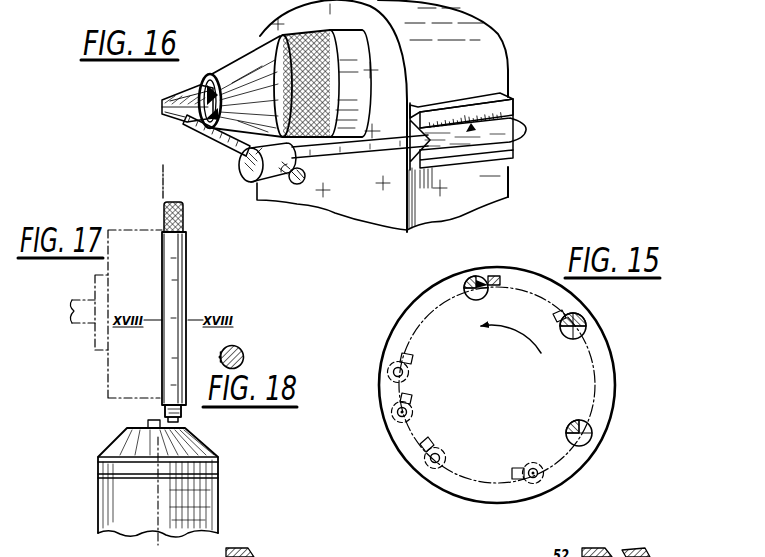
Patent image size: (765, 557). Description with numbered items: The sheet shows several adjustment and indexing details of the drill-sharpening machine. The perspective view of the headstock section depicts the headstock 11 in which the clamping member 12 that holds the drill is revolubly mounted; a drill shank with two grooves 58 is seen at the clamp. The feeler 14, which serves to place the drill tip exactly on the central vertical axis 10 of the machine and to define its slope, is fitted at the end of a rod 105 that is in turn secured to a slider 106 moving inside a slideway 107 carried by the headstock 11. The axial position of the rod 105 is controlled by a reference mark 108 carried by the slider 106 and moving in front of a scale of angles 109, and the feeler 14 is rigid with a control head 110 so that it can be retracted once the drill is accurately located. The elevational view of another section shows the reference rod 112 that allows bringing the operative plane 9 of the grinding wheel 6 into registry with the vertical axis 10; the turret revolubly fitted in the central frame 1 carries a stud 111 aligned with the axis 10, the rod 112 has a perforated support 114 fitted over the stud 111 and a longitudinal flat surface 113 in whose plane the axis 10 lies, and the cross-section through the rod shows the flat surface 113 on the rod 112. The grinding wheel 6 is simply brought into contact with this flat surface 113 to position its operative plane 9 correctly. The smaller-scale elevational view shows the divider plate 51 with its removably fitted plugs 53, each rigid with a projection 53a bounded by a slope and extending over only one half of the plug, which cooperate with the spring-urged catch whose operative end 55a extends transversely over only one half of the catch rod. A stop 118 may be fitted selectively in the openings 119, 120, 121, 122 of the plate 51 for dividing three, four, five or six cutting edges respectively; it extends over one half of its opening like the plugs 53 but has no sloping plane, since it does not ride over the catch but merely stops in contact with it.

In FIG. 17, the central frame 1 is at (203, 453).
In FIG. 17, the grinding wheel 6 is at (120, 243).
In FIG. 17, the operative plane 9 is at (167, 260).
In FIG. 17, the central vertical axis 10 is at (164, 191).
In FIG. 16, the headstock 11 is at (495, 51).
In FIG. 16, the clamping member 12 is at (222, 65).
In FIG. 16, the feeler 14 is at (210, 136).
In FIG. 15, the divider plate 51 is at (605, 402).
In FIG. 15, the plug 53 is at (474, 297).
In FIG. 15, the projection 53a is at (586, 322).
In FIG. 15, the operative end of catch 55a is at (495, 276).
In FIG. 16, the grooves 58 is at (176, 100).
In FIG. 16, the rod 105 is at (354, 152).
In FIG. 16, the slider 106 is at (522, 130).
In FIG. 16, the slideway 107 is at (413, 112).
In FIG. 16, the reference mark 108 is at (468, 134).
In FIG. 16, the scale of angles 109 is at (461, 114).
In FIG. 16, the control head 110 is at (296, 186).
In FIG. 17, the stud 111 is at (160, 412).
In FIG. 17, the reference rod 112 is at (180, 291).
In FIG. 18, the reference rod 112 is at (240, 349).
In FIG. 17, the longitudinal flat surface 113 is at (162, 368).
In FIG. 18, the longitudinal flat surface 113 is at (220, 357).
In FIG. 17, the perforated support 114 is at (148, 423).
In FIG. 15, the stop 118 is at (410, 412).
In FIG. 15, the opening 119 is at (541, 479).
In FIG. 15, the opening 120 is at (445, 458).
In FIG. 15, the opening 121 is at (409, 406).
In FIG. 15, the opening 122 is at (405, 372).